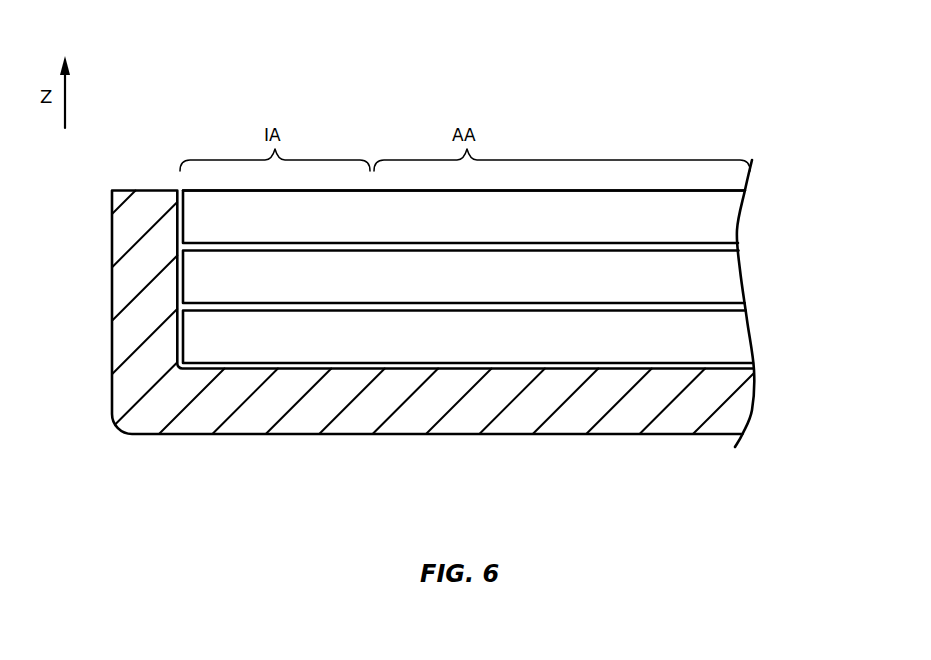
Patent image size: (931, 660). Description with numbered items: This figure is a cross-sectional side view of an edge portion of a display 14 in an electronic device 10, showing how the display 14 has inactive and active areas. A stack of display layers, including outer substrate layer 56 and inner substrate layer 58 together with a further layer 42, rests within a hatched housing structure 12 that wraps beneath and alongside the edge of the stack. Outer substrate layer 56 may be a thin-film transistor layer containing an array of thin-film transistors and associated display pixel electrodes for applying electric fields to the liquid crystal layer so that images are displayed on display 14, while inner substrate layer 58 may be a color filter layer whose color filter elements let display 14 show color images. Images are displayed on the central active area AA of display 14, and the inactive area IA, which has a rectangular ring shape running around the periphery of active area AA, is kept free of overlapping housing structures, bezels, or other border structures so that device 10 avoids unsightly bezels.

The device 10 is at (837, 183).
The housing 12 is at (415, 414).
The display 14 is at (632, 80).
The display layer 42 is at (730, 333).
The outer substrate layer 56 is at (728, 217).
The inner substrate layer 58 is at (730, 270).